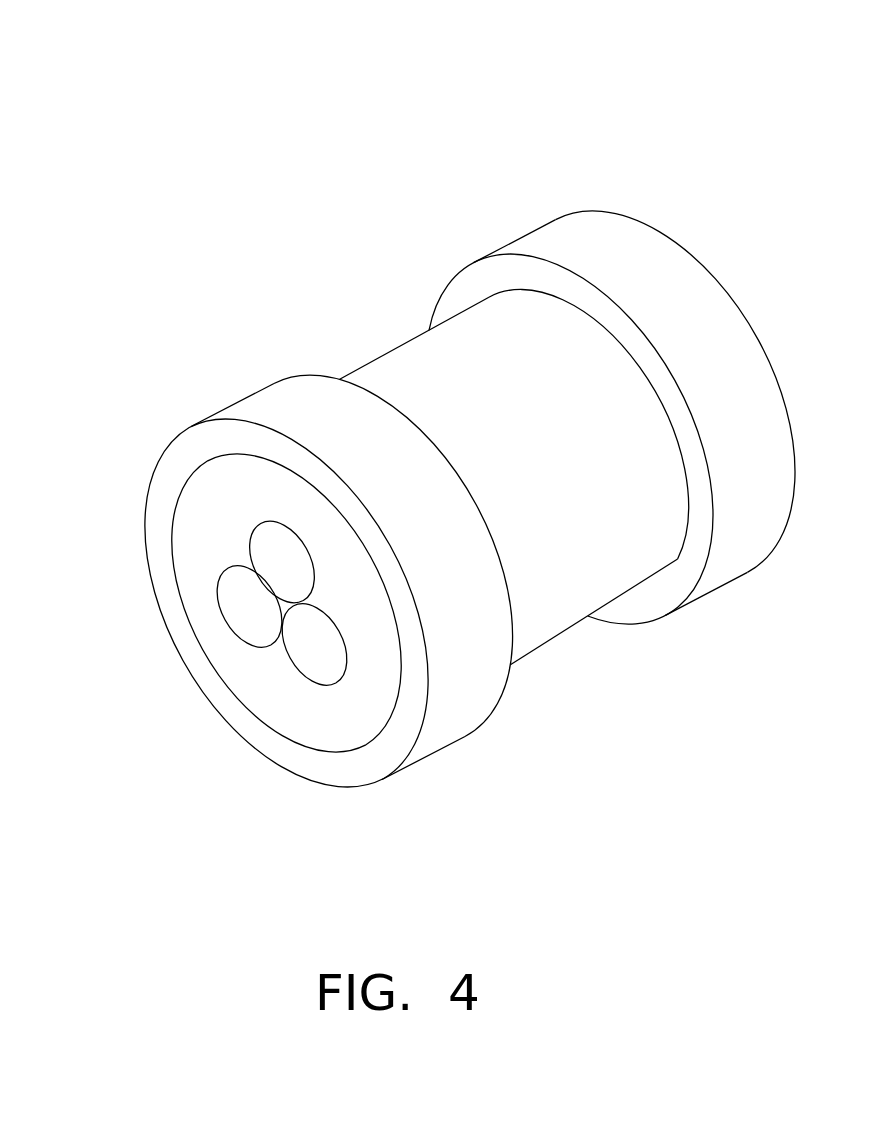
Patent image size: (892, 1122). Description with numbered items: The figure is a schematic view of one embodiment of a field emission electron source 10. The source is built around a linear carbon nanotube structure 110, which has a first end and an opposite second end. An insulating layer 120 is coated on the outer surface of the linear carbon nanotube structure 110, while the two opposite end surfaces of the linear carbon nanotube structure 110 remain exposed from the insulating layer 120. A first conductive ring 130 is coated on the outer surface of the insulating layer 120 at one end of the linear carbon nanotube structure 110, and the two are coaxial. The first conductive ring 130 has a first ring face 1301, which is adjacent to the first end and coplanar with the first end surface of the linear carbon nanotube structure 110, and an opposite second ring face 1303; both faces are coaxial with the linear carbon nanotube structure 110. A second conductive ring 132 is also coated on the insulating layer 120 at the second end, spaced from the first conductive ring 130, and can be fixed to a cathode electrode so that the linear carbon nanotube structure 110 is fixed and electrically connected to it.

The field emission electron source 10 is at (425, 431).
The linear carbon nanotube structure 110 is at (253, 607).
The insulating layer 120 is at (218, 490).
The first conductive ring 130 is at (294, 527).
The first ring face 1301 is at (197, 440).
The second ring face 1303 is at (328, 373).
The second conductive ring 132 is at (613, 233).